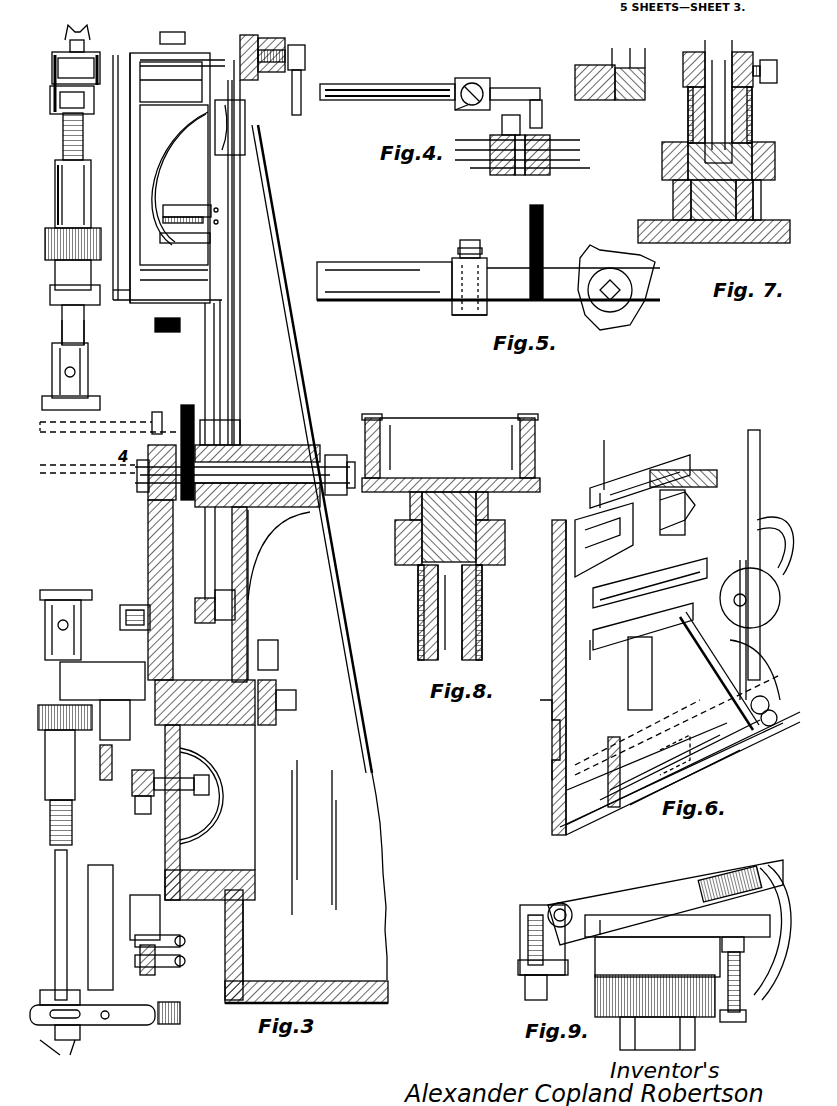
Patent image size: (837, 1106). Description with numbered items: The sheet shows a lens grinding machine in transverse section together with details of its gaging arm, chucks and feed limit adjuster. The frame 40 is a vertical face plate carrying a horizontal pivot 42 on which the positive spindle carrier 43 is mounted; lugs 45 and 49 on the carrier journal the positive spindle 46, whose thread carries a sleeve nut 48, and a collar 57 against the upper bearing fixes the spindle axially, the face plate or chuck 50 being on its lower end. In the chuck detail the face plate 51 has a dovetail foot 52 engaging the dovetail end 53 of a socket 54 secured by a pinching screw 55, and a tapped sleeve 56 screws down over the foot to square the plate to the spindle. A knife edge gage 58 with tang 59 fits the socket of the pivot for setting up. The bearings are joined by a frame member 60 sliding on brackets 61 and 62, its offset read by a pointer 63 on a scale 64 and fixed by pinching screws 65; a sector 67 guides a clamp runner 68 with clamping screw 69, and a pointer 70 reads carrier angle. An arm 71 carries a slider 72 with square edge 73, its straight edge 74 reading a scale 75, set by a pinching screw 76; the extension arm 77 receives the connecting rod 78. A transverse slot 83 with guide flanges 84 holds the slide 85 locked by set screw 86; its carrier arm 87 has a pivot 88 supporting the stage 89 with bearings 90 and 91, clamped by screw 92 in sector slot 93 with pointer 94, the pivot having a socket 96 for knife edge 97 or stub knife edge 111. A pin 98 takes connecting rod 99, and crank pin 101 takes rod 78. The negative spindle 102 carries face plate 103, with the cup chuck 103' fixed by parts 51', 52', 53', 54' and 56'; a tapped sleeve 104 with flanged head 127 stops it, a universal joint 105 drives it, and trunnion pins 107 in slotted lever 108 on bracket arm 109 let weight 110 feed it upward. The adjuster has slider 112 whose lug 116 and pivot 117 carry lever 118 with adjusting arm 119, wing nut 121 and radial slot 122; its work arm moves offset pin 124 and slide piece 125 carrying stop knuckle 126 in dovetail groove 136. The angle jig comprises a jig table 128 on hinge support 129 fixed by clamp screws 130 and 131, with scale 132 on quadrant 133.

In FIG. 3, the machine housing or frame 40 is at (254, 372).
In FIG. 3, the horizontal pivot 42 is at (250, 448).
In FIG. 4, the horizontal pivot 42 is at (645, 64).
In FIG. 5, the horizontal pivot 42 is at (626, 290).
In FIG. 3, the positive spindle carrier 43 is at (240, 180).
In FIG. 4, the positive spindle carrier 43 is at (576, 72).
In FIG. 5, the positive spindle carrier 43 is at (594, 256).
In FIG. 3, the upper journal bearing lug 45 is at (80, 66).
In FIG. 3, the positive spindle 46 is at (83, 140).
In FIG. 3, the sleeve nut 48 is at (73, 225).
In FIG. 3, the lower journal bearing lug 49 is at (78, 295).
In FIG. 3, the face plate or chuck 50 is at (77, 376).
In FIG. 7, the face plate 51 is at (714, 241).
In FIG. 7, the dovetail foot 52 is at (768, 200).
In FIG. 7, the dovetail end 53 is at (693, 200).
In FIG. 7, the socket 54 is at (699, 97).
In FIG. 3, the pinching screw 55 is at (66, 372).
In FIG. 7, the pinching screw 55 is at (768, 84).
In FIG. 7, the sleeve 56 is at (719, 147).
In FIG. 3, the collar 57 is at (100, 95).
In FIG. 3, the knife edge gage 58 is at (134, 432).
In FIG. 3, the tang 59 is at (160, 412).
In FIG. 3, the frame member 60 is at (175, 178).
In FIG. 3, the bracket 61 is at (195, 62).
In FIG. 3, the bracket 62 is at (174, 271).
In FIG. 3, the pointer 63 is at (200, 230).
In FIG. 3, the scale 64 is at (177, 206).
In FIG. 3, the pinching screws 65 is at (187, 330).
In FIG. 3, the sector 67 is at (229, 113).
In FIG. 3, the clamp runner 68 is at (270, 72).
In FIG. 3, the clamping screw 69 is at (305, 58).
In FIG. 3, the pointer 70 is at (242, 40).
In FIG. 3, the arm 71 is at (205, 470).
In FIG. 4, the arm 71 is at (402, 81).
In FIG. 5, the arm 71 is at (390, 264).
In FIG. 4, the slider 72 is at (456, 108).
In FIG. 5, the slider 72 is at (455, 314).
In FIG. 3, the square edge 73 is at (190, 406).
In FIG. 4, the square edge 73 is at (520, 90).
In FIG. 5, the square edge 73 is at (530, 218).
In FIG. 5, the straight edge 74 is at (452, 290).
In FIG. 5, the scale 75 is at (445, 287).
In FIG. 4, the pinching screw 76 is at (466, 84).
In FIG. 5, the pinching screw 76 is at (465, 242).
In FIG. 3, the vertical extension arm 77 is at (212, 573).
In FIG. 3, the connecting rod 78 is at (212, 625).
In FIG. 3, the transverse slot 83 is at (258, 728).
In FIG. 3, the guide flanges 84 is at (215, 725).
In FIG. 3, the slide 85 is at (200, 812).
In FIG. 3, the set screw 86 is at (278, 665).
In FIG. 3, the carrier arm 87 is at (176, 594).
In FIG. 3, the pivot 88 is at (148, 492).
In FIG. 3, the stage 89 is at (148, 546).
In FIG. 3, the upper negative journal bearing 90 is at (80, 680).
In FIG. 3, the lower negative journal bearing 91 is at (72, 925).
In FIG. 3, the clamp screw 92 is at (171, 943).
In FIG. 3, the sector slot 93 is at (169, 966).
In FIG. 3, the pointer 94 is at (148, 975).
In FIG. 3, the axial socket 96 is at (137, 480).
In FIG. 3, the knife edge 97 is at (87, 458).
In FIG. 3, the pin 98 is at (210, 785).
In FIG. 3, the adjustable connecting rod 99 is at (140, 813).
In FIG. 3, the crank pin 101 is at (120, 613).
In FIG. 3, the negative spindle 102 is at (91, 927).
In FIG. 3, the face plate or chuck 103 is at (52, 615).
In FIG. 3, the tapped sleeve 104 is at (62, 787).
In FIG. 3, the universal joint 105 is at (92, 1030).
In FIG. 3, the trunnion pins 107 is at (69, 988).
In FIG. 3, the slotted lever 108 is at (125, 1026).
In FIG. 3, the bracket arm 109 is at (135, 905).
In FIG. 3, the weight 110 is at (168, 1026).
In FIG. 4, the rear stub knife edge 111 is at (502, 125).
In FIG. 6, the slider 112 is at (700, 696).
In FIG. 6, the lug 116 is at (752, 573).
In FIG. 6, the pivot 117 is at (752, 598).
In FIG. 6, the bell crank slotted adjusting lever 118 is at (650, 583).
In FIG. 6, the adjusting arm 119 is at (643, 631).
In FIG. 6, the wing nut 121 is at (759, 670).
In FIG. 6, the radial slot 122 is at (772, 725).
In FIG. 6, the offset pin 124 is at (628, 680).
In FIG. 6, the vertical slide piece 125 is at (625, 485).
In FIG. 3, the stop knuckle 126 is at (112, 750).
In FIG. 6, the stop knuckle 126 is at (672, 490).
In FIG. 3, the flanged head 127 is at (110, 715).
In FIG. 9, the jig table 128 is at (665, 887).
In FIG. 9, the hinge support 129 is at (555, 908).
In FIG. 9, the clamp screw 130 is at (528, 944).
In FIG. 9, the clamp screw 131 is at (720, 906).
In FIG. 9, the marked scale 132 is at (686, 993).
In FIG. 9, the quadrant 133 is at (766, 932).
In FIG. 6, the dovetail horizontal groove 136 is at (592, 525).
In FIG. 8, the face plate or chuck 103' is at (450, 436).
In FIG. 8, the face plate 51' is at (451, 472).
In FIG. 8, the dovetail foot 52' is at (397, 506).
In FIG. 8, the dovetail end 53' is at (472, 527).
In FIG. 8, the socket 54' is at (433, 612).
In FIG. 8, the sleeve 56' is at (467, 542).